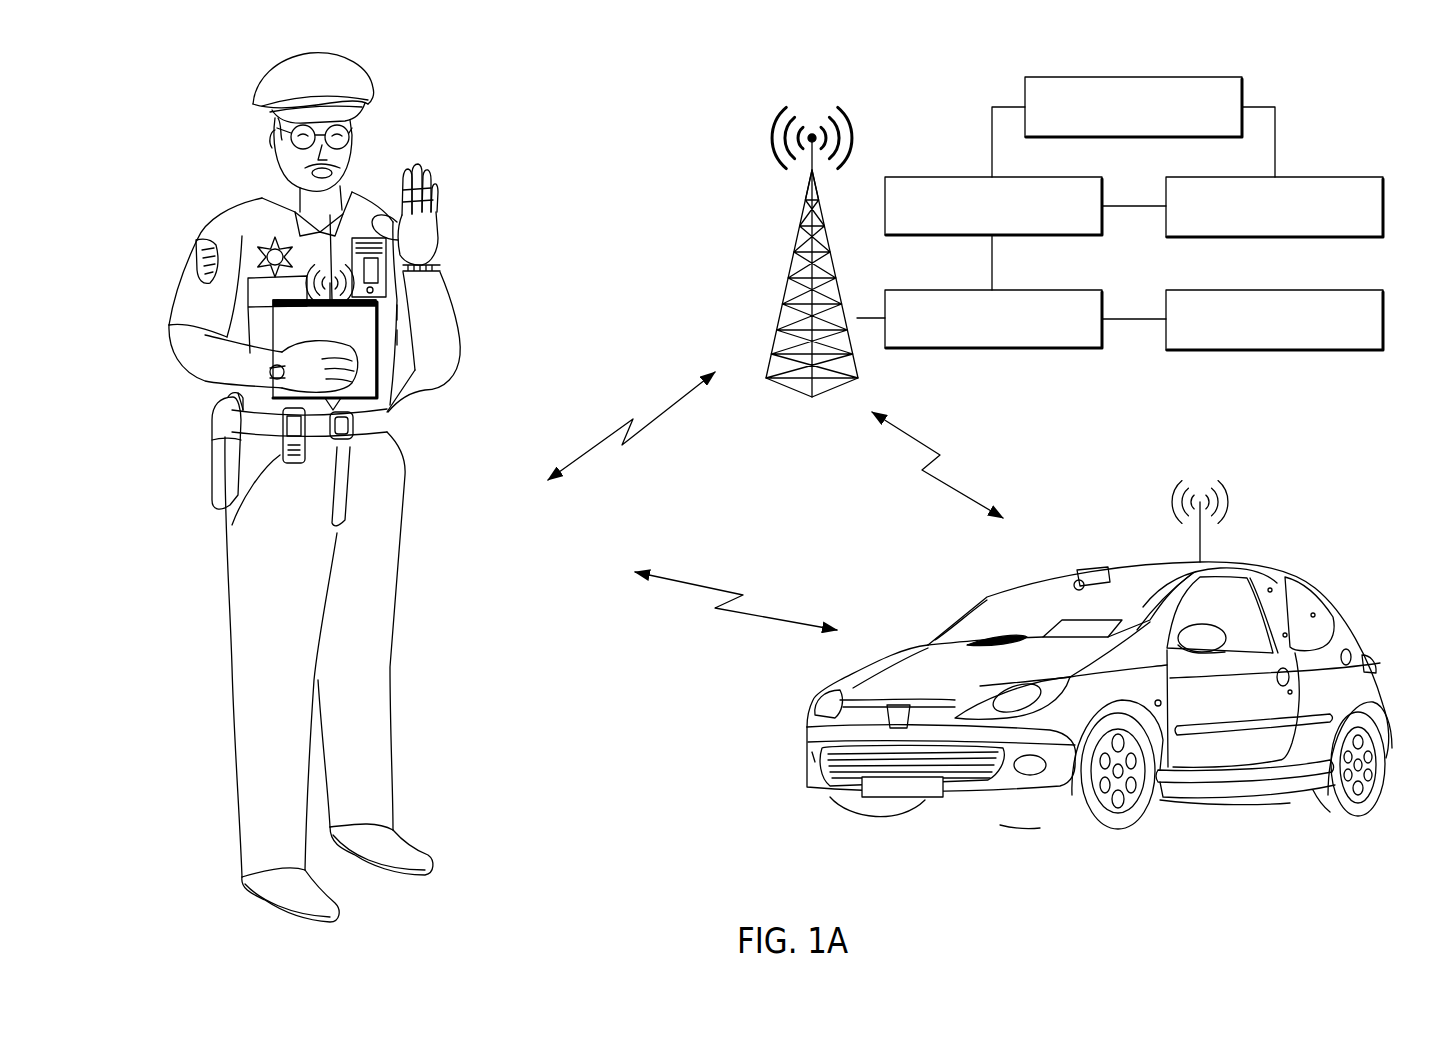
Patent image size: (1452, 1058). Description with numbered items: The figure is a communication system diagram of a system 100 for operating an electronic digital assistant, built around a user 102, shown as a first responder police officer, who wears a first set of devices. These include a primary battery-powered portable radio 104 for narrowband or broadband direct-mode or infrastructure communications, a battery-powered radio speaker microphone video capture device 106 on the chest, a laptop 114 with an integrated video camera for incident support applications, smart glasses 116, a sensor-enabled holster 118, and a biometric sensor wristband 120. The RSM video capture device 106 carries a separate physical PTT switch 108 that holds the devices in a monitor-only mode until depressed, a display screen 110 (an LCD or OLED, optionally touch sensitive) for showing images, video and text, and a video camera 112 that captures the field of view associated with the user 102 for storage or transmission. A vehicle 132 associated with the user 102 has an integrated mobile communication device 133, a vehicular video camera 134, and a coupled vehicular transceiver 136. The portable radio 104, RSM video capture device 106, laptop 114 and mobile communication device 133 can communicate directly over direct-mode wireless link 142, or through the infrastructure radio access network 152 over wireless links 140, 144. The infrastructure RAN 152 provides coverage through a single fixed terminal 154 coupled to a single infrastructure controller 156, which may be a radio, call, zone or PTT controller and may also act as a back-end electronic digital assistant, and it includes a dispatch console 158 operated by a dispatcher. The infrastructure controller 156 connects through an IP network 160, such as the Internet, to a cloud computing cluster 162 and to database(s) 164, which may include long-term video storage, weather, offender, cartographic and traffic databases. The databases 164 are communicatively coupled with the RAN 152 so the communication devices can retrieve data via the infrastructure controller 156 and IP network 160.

The system 100 is at (158, 93).
The user 102 is at (385, 187).
The portable radio 104 is at (235, 506).
The radio speaker microphone (RSM) video capture device 106 is at (404, 226).
The PTT switch 108 is at (427, 214).
The display screen 110 is at (372, 264).
The video camera 112 is at (378, 290).
The laptop 114 is at (377, 388).
The smart glasses 116 is at (282, 133).
The sensor-enabled holster 118 is at (212, 466).
The biometric sensor wristband 120 is at (437, 268).
The vehicle 132 is at (1355, 590).
The mobile communication device 133 is at (1048, 630).
The vehicular video camera 134 is at (1085, 568).
The vehicular transceiver 136 is at (1202, 535).
The wireless link 140 is at (672, 408).
The direct-mode wireless link 142 is at (693, 585).
The wireless link 144 is at (908, 438).
The infrastructure radio access network (RAN) 152 is at (738, 138).
The fixed terminal 154 is at (790, 285).
The infrastructure controller 156 is at (990, 350).
The dispatch console 158 is at (1386, 322).
The IP network 160 is at (935, 238).
The cloud computing cluster 162 is at (1386, 208).
The database(s) 164 is at (1024, 93).